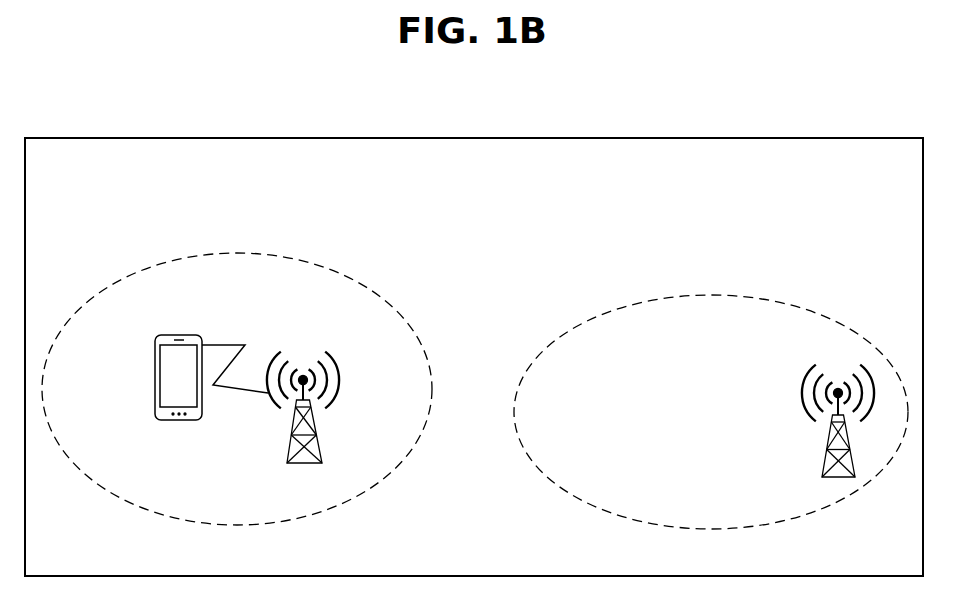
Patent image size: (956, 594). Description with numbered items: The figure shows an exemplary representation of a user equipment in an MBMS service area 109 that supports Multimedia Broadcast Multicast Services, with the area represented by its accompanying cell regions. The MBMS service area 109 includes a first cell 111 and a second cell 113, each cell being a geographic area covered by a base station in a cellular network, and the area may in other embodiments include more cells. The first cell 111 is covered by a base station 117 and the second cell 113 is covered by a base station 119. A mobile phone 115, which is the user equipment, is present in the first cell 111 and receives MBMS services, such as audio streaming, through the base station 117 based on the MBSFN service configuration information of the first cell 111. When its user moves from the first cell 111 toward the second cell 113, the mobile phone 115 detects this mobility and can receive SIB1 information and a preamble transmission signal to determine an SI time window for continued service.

The MBMS service area 109 is at (618, 178).
The first cell 111 is at (326, 293).
The second cell 113 is at (806, 348).
The mobile phone 115 is at (172, 318).
The base station of first cell 117 is at (384, 416).
The base station of second cell 119 is at (820, 452).